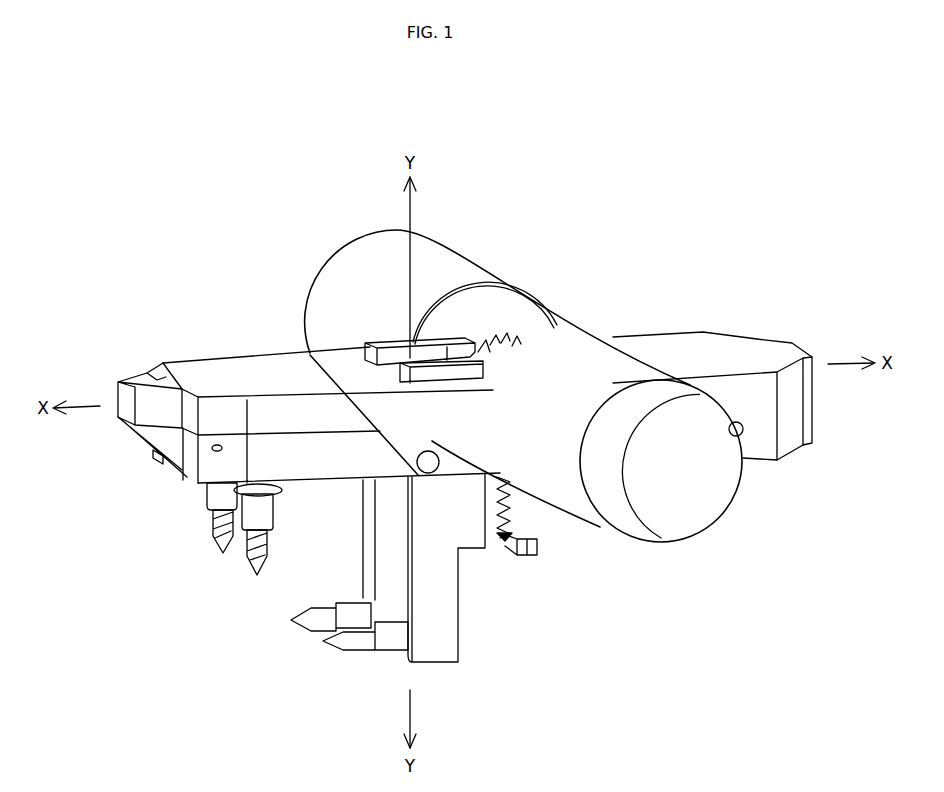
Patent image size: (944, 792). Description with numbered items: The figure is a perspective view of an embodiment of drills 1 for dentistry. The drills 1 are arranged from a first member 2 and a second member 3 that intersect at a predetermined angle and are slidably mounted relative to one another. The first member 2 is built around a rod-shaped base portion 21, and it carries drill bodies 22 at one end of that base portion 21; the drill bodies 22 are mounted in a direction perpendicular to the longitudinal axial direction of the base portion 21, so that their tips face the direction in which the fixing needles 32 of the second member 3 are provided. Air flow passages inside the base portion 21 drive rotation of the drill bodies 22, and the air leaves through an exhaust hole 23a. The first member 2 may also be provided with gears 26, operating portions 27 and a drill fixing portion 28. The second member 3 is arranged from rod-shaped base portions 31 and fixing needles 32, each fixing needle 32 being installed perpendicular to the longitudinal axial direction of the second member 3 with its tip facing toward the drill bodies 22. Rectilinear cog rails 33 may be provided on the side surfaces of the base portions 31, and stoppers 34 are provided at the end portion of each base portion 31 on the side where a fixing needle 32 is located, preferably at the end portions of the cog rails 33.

The drills 1 is at (179, 134).
The first member 2 is at (178, 265).
The second member 3 is at (552, 666).
The base portion 21 is at (731, 350).
The drill bodies 22 is at (218, 543).
The exhaust hole 23a is at (215, 442).
The gears 26 is at (495, 376).
The operating portions 27 is at (447, 265).
The drill fixing portion 28 is at (240, 372).
The base portions 31 is at (383, 353).
The fixing needles 32 is at (302, 625).
The rectilinear cog rails 33 is at (510, 520).
The stoppers 34 is at (533, 555).